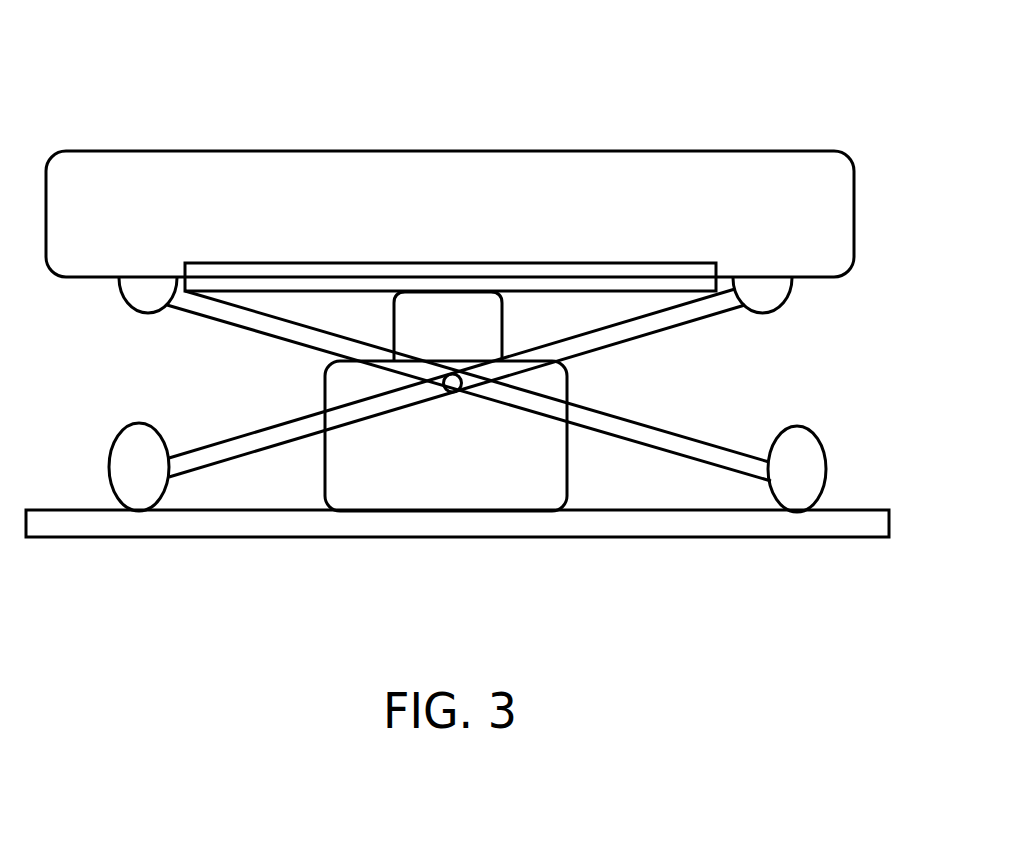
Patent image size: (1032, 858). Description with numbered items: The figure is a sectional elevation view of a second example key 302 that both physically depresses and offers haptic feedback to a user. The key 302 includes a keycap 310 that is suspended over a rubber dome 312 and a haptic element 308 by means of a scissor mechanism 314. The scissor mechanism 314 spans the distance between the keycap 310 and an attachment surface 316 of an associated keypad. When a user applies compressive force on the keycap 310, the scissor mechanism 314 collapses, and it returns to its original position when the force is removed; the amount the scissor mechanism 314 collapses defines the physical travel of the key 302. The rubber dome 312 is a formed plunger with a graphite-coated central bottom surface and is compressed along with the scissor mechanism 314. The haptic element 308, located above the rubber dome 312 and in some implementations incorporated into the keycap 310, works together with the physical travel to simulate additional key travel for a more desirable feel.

The key 302 is at (196, 68).
The haptic element 308 is at (562, 263).
The keycap 310 is at (465, 224).
The rubber dome 312 is at (470, 470).
The scissor mechanism 314 is at (670, 326).
The attachment surface 316 is at (833, 510).